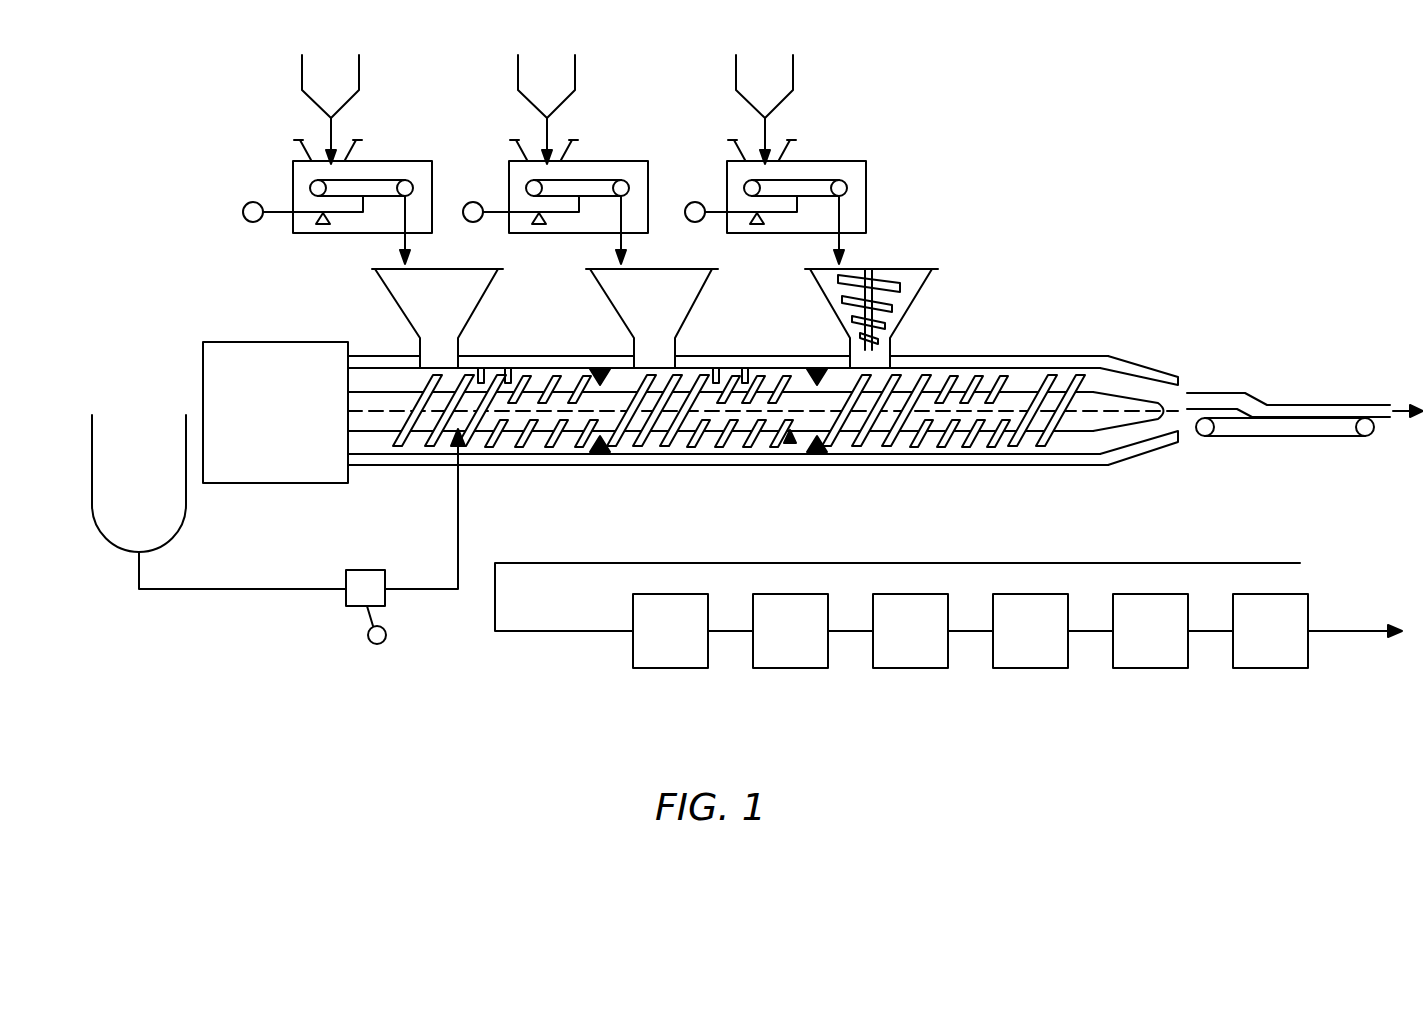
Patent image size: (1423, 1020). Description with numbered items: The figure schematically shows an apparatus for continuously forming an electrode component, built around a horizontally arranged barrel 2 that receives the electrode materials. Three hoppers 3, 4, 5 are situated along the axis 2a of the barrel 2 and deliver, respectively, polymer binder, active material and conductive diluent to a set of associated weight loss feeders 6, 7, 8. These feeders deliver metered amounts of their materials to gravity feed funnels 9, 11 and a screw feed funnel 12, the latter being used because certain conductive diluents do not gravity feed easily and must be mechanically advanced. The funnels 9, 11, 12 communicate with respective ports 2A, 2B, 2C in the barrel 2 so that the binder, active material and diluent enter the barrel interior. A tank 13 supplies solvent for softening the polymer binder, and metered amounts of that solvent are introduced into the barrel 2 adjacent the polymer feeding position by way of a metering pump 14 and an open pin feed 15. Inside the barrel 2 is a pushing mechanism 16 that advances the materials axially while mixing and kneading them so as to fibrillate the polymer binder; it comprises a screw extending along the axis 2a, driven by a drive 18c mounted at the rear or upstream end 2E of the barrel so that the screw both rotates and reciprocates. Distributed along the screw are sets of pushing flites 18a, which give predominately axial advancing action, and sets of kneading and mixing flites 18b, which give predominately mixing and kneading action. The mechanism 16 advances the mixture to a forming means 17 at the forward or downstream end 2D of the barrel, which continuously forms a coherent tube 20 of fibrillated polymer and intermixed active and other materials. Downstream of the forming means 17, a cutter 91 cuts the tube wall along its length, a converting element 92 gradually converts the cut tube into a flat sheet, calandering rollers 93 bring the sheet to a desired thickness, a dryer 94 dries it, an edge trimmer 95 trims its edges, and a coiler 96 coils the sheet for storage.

The barrel 2 is at (979, 355).
The port 2A is at (443, 355).
The port 2B is at (663, 355).
The port 2C is at (878, 355).
The downstream end of the barrel 2D is at (1093, 380).
The upstream end of the barrel 2E is at (385, 378).
The axis of the barrel 2a is at (1110, 413).
The hopper 3 is at (360, 75).
The hopper 4 is at (576, 75).
The hopper 5 is at (794, 75).
The weight loss feeder 6 is at (383, 161).
The weight loss feeder 7 is at (599, 161).
The weight loss feeder 8 is at (817, 161).
The gravity feed funnel 9 is at (490, 280).
The gravity feed funnel 11 is at (705, 280).
The screw feed funnel 12 is at (925, 280).
The tank 13 is at (187, 507).
The metering pump 14 is at (346, 584).
The open pin feed 15 is at (461, 456).
The pushing mechanism 16 is at (790, 445).
The forming means 17 is at (1131, 355).
The pushing flites 18a is at (421, 448).
The kneading and mixing flites 18b is at (548, 448).
The drive 18c is at (268, 352).
The electrode component 20 is at (1245, 410).
The cutter 91 is at (672, 656).
The converting element 92 is at (792, 656).
The calandering rollers 93 is at (912, 656).
The dryer 94 is at (1032, 656).
The edge trimmer 95 is at (1152, 656).
The coiler 96 is at (1272, 656).